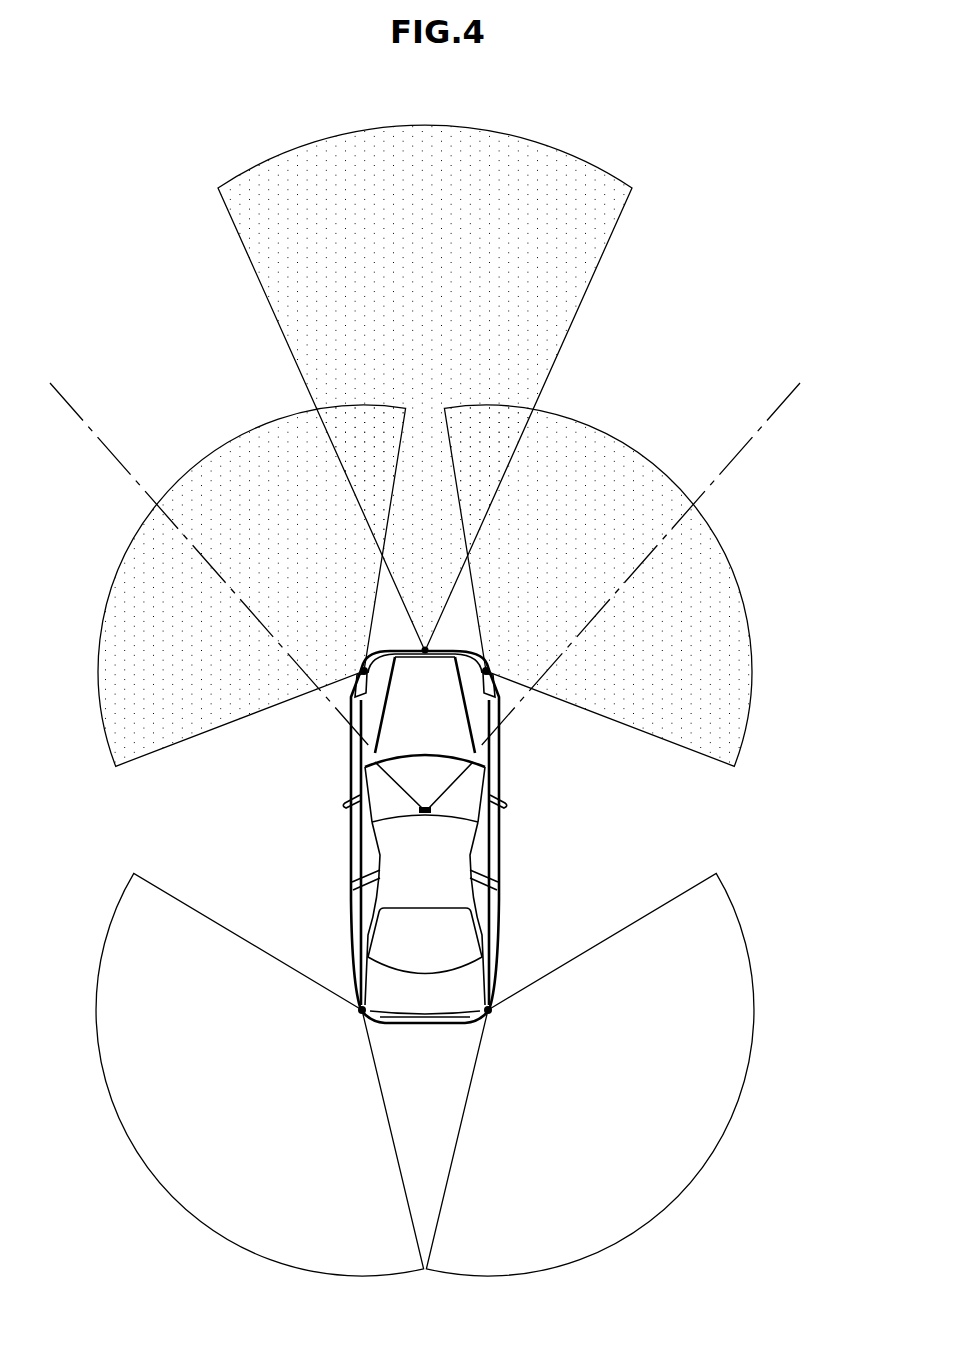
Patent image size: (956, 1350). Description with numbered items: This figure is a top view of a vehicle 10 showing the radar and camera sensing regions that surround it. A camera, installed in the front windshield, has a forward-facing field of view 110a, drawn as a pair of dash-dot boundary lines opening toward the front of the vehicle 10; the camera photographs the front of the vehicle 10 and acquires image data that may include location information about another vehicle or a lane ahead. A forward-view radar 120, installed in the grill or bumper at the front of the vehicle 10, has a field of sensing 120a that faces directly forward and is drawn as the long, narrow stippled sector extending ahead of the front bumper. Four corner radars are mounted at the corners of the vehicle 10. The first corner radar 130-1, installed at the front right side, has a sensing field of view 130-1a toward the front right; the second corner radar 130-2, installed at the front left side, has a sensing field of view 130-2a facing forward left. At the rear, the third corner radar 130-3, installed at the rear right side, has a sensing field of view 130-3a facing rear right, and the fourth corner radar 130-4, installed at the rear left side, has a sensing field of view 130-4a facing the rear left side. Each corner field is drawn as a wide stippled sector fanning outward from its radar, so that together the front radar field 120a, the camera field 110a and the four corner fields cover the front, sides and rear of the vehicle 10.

The vehicle 10 is at (480, 843).
The field of view 110a is at (755, 432).
The forward-view radar 120 is at (426, 650).
The field of sensing 120a is at (582, 270).
The first corner radar 130-1 is at (487, 670).
The sensing field of view 130-1a is at (627, 460).
The second corner radar 130-2 is at (363, 670).
The sensing field of view 130-2a is at (223, 460).
The third corner radar 130-3 is at (493, 1015).
The sensing field of view 130-3a is at (700, 1153).
The fourth corner radar 130-4 is at (357, 1015).
The sensing field of view 130-4a is at (150, 1153).